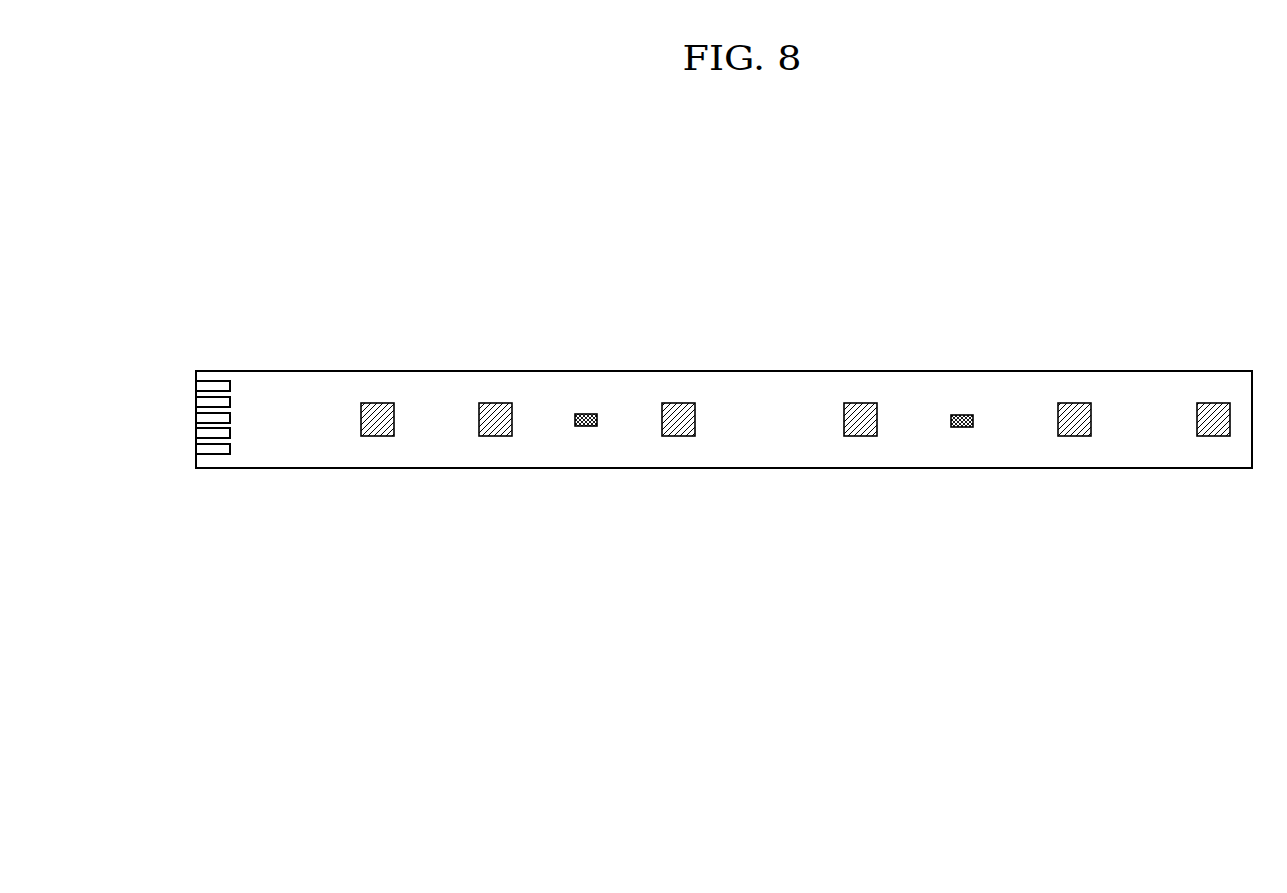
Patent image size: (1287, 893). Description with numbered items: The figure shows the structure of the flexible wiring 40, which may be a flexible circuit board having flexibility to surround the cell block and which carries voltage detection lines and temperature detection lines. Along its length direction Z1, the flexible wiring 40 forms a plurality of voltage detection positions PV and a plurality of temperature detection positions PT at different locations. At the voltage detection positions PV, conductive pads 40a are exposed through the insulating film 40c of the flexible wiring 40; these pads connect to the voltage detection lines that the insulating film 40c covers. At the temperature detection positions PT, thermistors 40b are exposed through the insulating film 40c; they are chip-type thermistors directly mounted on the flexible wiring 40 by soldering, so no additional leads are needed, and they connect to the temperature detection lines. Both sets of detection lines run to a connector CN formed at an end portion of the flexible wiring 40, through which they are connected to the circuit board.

The flexible wiring 40 is at (228, 348).
The conductive pads 40a is at (373, 400).
The thermistors 40b is at (575, 400).
The insulating film 40c is at (770, 402).
The voltage detection positions PV is at (377, 401).
The temperature detection positions PT is at (588, 400).
The connector CN is at (203, 434).
The length direction Z1 is at (667, 520).